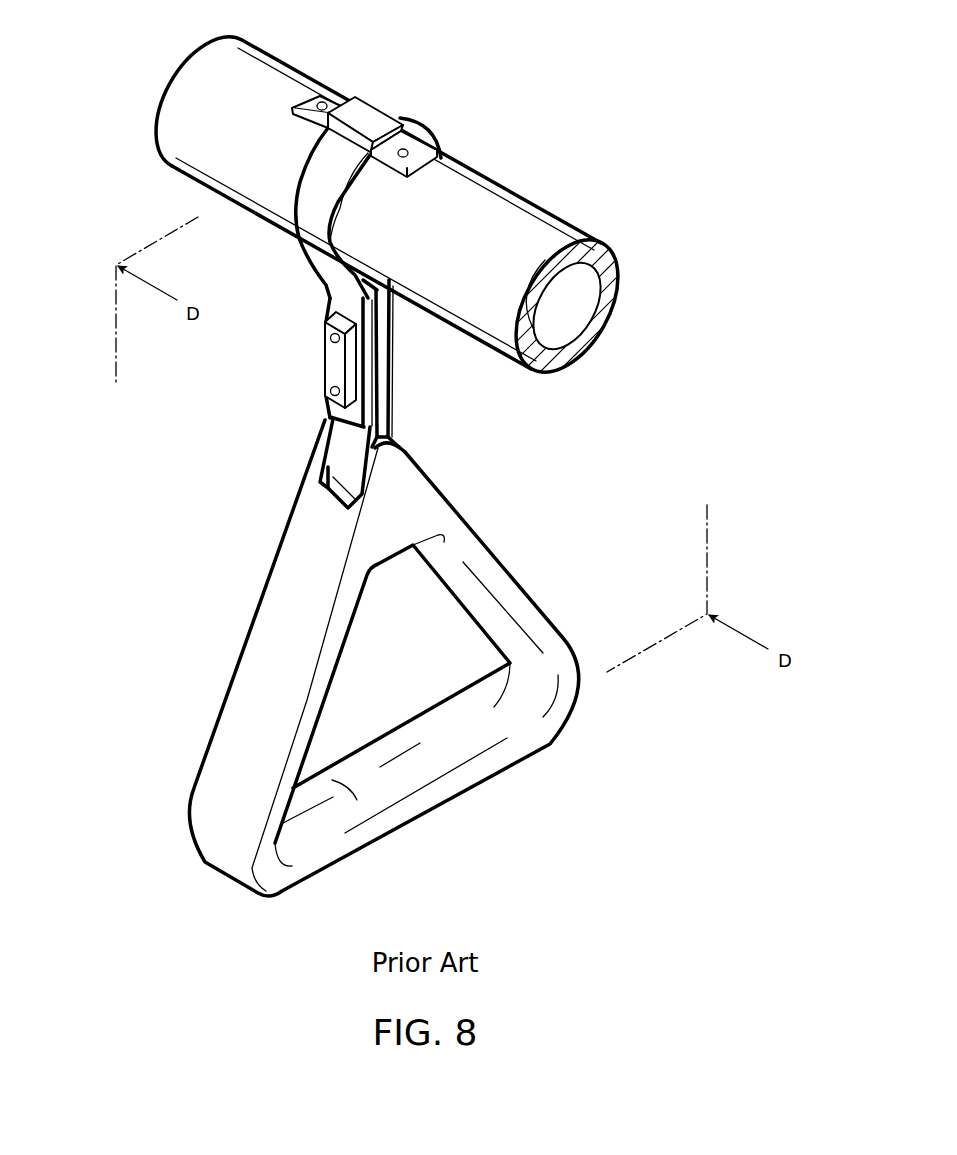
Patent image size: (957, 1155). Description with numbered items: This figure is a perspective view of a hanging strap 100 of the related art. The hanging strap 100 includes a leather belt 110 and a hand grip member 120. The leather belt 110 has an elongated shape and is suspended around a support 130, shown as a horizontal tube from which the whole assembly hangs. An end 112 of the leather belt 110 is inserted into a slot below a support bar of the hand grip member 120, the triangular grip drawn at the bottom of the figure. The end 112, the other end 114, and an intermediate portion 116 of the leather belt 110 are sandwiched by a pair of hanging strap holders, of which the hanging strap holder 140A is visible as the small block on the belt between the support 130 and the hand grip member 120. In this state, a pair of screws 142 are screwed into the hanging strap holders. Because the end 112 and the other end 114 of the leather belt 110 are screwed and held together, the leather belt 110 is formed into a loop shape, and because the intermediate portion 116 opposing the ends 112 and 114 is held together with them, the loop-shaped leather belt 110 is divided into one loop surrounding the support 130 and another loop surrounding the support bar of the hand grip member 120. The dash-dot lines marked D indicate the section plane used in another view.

The hanging strap 100 is at (122, 550).
The leather belt 110 is at (313, 183).
The end of the leather belt 112 is at (383, 308).
The other end of the leather belt 114 is at (392, 434).
The intermediate portion of the leather belt 116 is at (390, 377).
The hand grip member 120 is at (212, 731).
The support 130 is at (204, 72).
The hanging strap holder 140A is at (335, 377).
The screws 142 is at (326, 334).